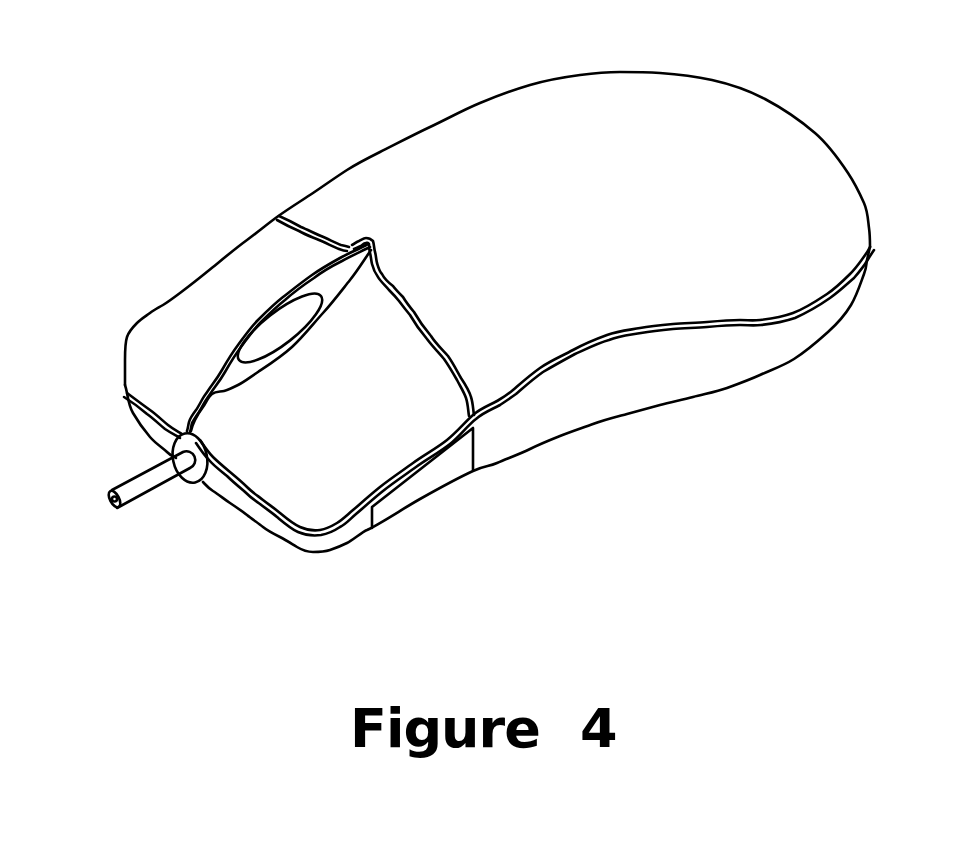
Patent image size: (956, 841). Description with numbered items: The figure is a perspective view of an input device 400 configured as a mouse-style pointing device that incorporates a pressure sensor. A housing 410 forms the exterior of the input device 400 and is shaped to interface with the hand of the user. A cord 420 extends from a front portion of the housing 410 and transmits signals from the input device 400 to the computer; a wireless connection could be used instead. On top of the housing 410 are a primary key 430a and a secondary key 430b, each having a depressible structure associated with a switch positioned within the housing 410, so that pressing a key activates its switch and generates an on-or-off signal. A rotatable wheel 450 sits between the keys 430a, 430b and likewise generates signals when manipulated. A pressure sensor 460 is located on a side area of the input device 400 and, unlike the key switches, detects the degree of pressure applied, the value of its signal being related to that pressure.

The input device 400 is at (131, 286).
The housing 410 is at (645, 92).
The cord 420 is at (155, 477).
The primary key 430a is at (338, 478).
The secondary key 430b is at (165, 344).
The rotatable wheel 450 is at (293, 321).
The pressure sensor 460 is at (417, 488).